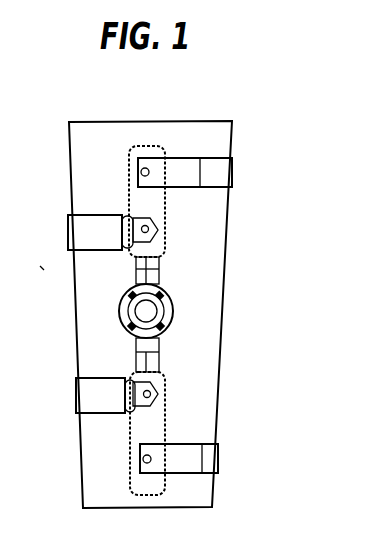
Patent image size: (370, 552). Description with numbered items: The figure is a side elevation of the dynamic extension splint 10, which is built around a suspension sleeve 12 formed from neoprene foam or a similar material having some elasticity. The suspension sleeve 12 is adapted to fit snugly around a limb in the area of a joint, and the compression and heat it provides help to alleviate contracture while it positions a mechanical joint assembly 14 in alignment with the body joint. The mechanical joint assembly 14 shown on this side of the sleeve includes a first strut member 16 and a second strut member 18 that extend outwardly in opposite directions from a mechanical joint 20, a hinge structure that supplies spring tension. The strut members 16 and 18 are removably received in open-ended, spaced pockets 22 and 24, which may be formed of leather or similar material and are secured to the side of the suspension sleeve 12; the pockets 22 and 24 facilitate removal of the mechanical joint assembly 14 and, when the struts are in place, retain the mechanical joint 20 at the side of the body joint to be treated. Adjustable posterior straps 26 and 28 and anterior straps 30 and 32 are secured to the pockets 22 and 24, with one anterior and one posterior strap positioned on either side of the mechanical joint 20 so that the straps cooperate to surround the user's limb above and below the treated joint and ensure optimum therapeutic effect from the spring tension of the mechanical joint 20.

The dynamic extension splint 10 is at (252, 277).
The suspension sleeve 12 is at (210, 337).
The mechanical joint assembly 14 is at (138, 315).
The first strut member 16 is at (132, 263).
The second strut member 18 is at (160, 360).
The mechanical joint 20 is at (170, 300).
The pocket 22 is at (151, 286).
The pocket 24 is at (140, 430).
The posterior strap 26 is at (158, 229).
The posterior strap 28 is at (77, 398).
The anterior strap 30 is at (180, 175).
The anterior strap 32 is at (222, 453).